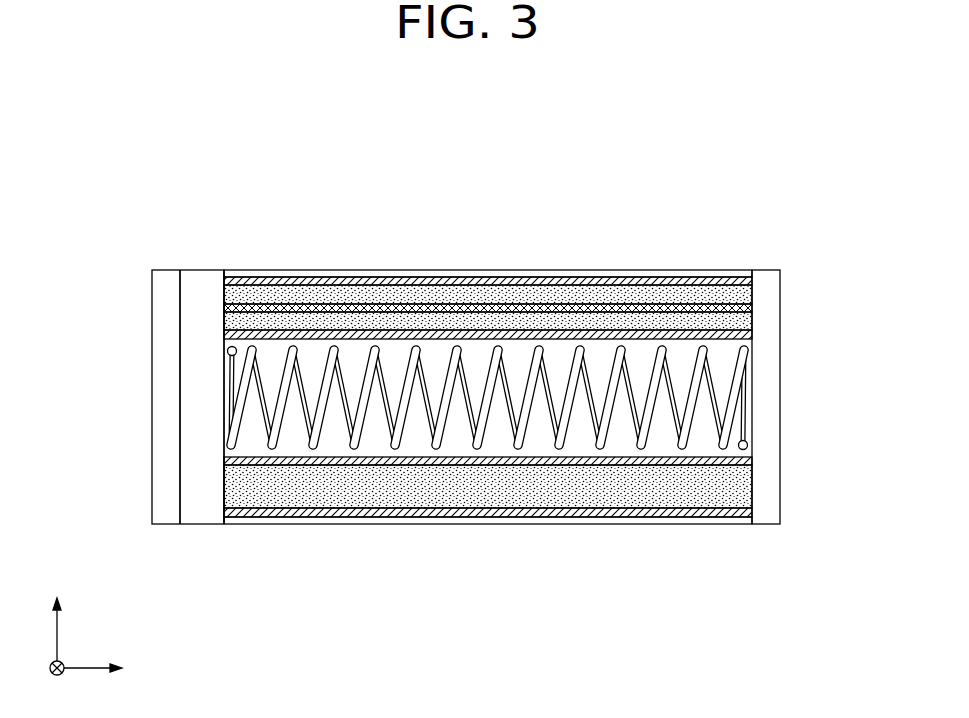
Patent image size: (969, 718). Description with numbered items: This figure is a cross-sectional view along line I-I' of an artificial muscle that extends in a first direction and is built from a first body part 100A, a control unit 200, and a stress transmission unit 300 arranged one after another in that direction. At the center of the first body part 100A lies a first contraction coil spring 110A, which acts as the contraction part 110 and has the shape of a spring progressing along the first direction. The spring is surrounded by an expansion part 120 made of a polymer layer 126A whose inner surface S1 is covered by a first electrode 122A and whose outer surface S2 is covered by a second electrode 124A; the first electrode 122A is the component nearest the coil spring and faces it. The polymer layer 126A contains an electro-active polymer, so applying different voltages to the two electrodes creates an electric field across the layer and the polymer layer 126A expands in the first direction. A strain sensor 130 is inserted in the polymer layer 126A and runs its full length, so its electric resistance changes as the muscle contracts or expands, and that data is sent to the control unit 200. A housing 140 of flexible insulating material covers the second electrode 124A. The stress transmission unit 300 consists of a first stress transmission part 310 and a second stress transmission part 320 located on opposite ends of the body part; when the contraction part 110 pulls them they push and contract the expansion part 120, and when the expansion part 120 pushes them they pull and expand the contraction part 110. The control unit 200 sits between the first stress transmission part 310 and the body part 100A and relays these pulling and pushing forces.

The first body part 100A is at (752, 158).
The first contraction coil spring 110A is at (702, 345).
The contraction part 110 is at (494, 328).
The expansion part 120 is at (580, 203).
The first electrode 122A is at (552, 334).
The second electrode 124A is at (418, 285).
The polymer layer 126A is at (485, 295).
The strain sensor 130 is at (277, 306).
The housing 140 is at (350, 273).
The control unit 200 is at (200, 280).
The stress transmission unit 300 is at (463, 397).
The first stress transmission part 310 is at (162, 397).
The second stress transmission part 320 is at (770, 398).
The inner surface S1 is at (752, 345).
The outer surface S2 is at (752, 273).